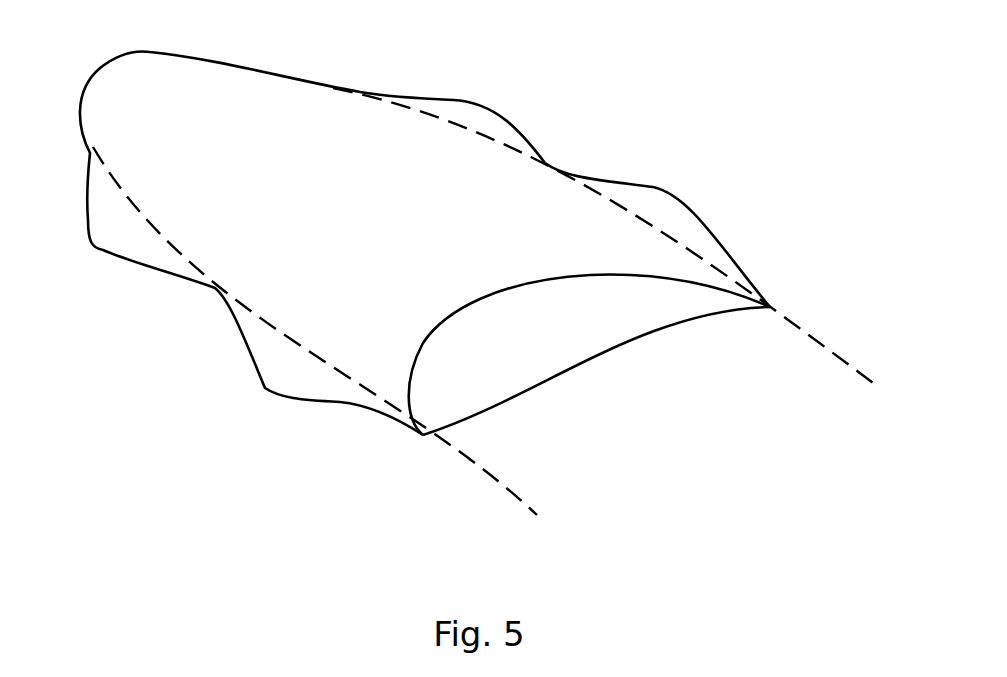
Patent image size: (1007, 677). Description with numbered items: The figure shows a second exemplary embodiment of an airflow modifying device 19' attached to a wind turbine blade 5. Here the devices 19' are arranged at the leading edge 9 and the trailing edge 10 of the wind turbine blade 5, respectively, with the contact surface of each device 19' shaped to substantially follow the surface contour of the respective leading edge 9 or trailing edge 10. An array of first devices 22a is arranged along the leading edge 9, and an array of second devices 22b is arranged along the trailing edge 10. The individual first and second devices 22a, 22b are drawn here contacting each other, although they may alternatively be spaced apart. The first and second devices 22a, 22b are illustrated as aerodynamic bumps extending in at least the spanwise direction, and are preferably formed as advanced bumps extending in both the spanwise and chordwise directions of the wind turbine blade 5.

The wind turbine blade 5 is at (411, 237).
The second devices 22b is at (472, 117).
The first devices 22a is at (117, 235).
The device 19' is at (641, 130).
The trailing edge 10 is at (853, 368).
The leading edge 9 is at (510, 497).